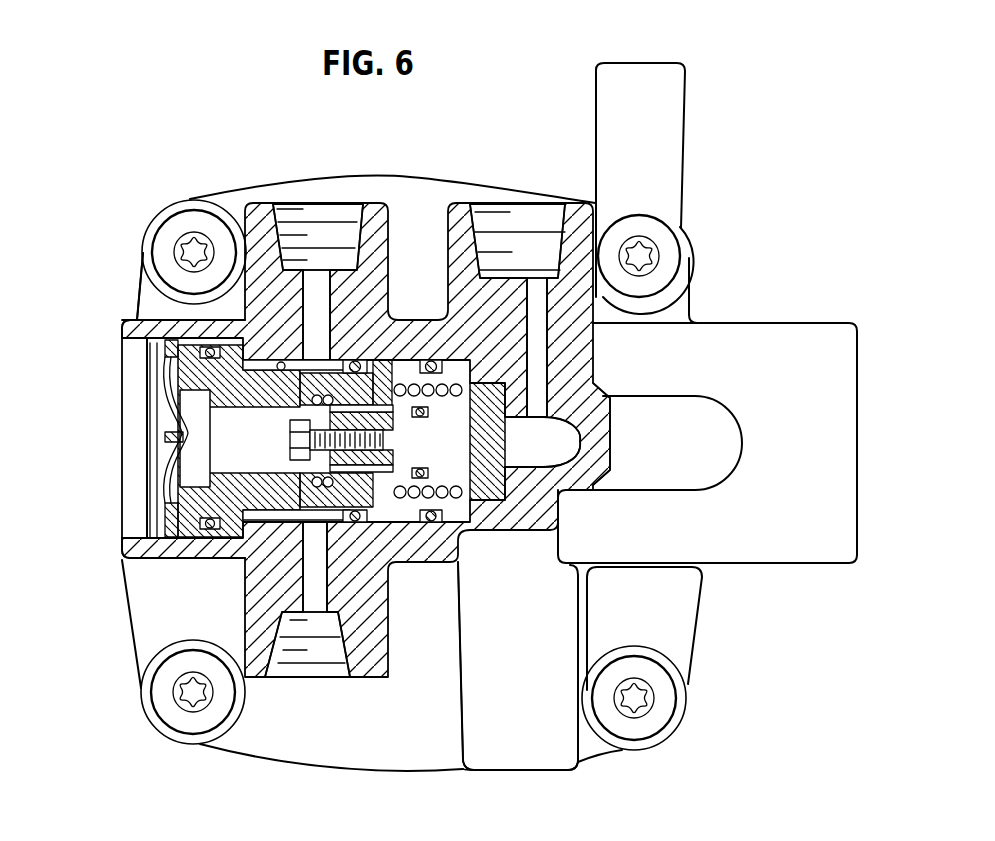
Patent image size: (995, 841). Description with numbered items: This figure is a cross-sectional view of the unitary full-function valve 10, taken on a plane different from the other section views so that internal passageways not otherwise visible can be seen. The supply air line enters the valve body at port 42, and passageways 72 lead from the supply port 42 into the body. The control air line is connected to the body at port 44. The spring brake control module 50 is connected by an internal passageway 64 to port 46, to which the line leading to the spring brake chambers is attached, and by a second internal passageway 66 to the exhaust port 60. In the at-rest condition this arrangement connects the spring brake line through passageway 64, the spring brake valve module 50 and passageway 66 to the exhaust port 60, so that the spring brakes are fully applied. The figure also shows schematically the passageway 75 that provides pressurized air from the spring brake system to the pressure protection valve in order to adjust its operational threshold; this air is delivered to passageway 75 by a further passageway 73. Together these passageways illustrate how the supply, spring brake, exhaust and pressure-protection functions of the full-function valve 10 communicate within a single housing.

The unitary full-function valve 10 is at (212, 140).
The port 42 is at (517, 203).
The port 44 is at (548, 772).
The port 46 is at (347, 200).
The spring brake valve module 50 is at (494, 475).
The exhaust port 60 is at (150, 400).
The internal passageway 64 is at (320, 306).
The internal passageway 66 is at (237, 452).
The passageway 72 is at (540, 372).
The passageway 73 is at (137, 320).
The passageway 75 is at (281, 361).